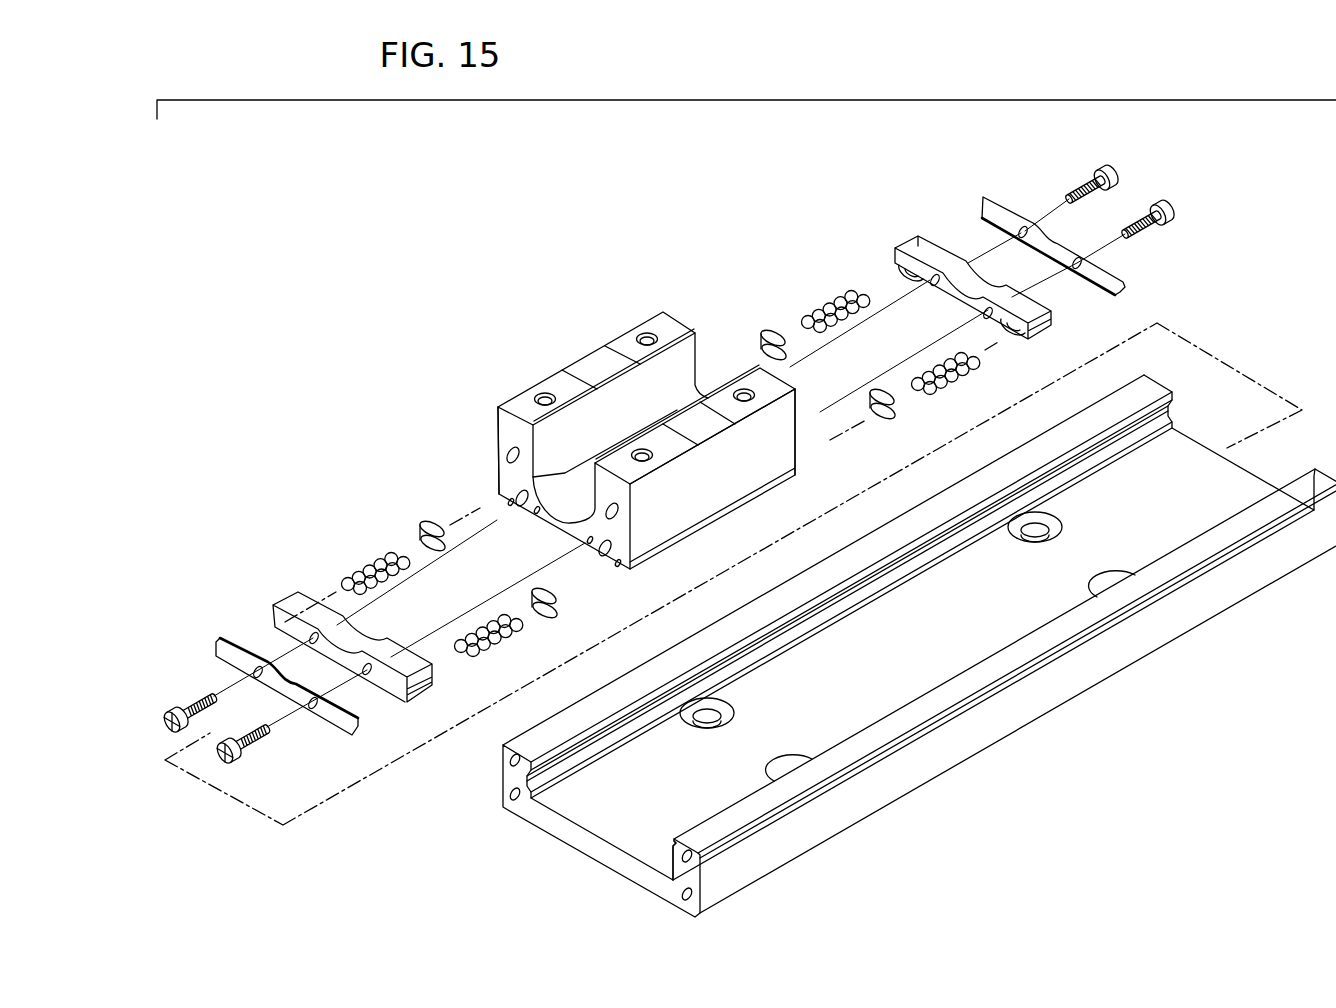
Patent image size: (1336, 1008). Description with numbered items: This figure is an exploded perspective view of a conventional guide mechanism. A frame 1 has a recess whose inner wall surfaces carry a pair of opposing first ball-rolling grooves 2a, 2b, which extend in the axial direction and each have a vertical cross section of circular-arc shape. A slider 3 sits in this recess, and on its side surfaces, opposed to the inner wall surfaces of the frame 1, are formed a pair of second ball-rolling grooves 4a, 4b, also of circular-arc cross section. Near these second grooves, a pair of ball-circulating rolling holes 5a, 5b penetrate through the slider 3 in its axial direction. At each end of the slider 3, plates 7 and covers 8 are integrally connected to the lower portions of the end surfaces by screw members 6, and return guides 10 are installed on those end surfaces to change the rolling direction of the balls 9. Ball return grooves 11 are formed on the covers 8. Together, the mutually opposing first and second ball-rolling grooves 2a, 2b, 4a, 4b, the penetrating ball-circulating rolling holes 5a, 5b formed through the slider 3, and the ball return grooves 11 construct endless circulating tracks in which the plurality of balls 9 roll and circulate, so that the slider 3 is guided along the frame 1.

The frame 1 is at (1004, 737).
The first ball-rolling groove 2a is at (566, 760).
The first ball-rolling groove 2b is at (672, 866).
The slider 3 is at (582, 358).
The second ball-rolling groove 4a is at (496, 488).
The second ball-rolling groove 4b is at (797, 476).
The ball-circulating rolling hole 5a is at (526, 494).
The ball-circulating rolling hole 5b is at (607, 545).
The screw member 6 is at (176, 710).
The plate 7 is at (232, 637).
The cover 8 is at (298, 597).
The ball 9 is at (367, 565).
The return guide 10 is at (428, 520).
The ball return groove 11 is at (895, 265).